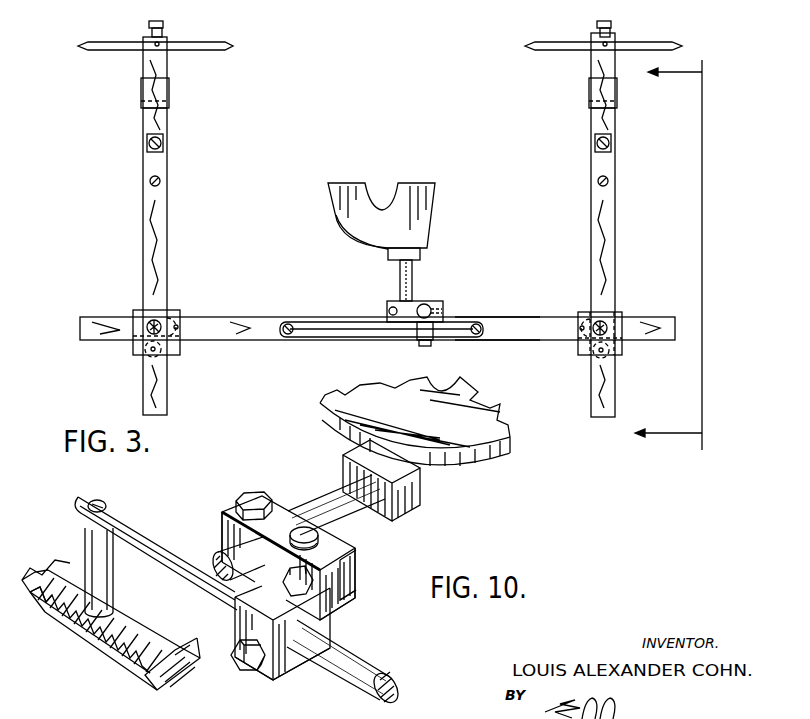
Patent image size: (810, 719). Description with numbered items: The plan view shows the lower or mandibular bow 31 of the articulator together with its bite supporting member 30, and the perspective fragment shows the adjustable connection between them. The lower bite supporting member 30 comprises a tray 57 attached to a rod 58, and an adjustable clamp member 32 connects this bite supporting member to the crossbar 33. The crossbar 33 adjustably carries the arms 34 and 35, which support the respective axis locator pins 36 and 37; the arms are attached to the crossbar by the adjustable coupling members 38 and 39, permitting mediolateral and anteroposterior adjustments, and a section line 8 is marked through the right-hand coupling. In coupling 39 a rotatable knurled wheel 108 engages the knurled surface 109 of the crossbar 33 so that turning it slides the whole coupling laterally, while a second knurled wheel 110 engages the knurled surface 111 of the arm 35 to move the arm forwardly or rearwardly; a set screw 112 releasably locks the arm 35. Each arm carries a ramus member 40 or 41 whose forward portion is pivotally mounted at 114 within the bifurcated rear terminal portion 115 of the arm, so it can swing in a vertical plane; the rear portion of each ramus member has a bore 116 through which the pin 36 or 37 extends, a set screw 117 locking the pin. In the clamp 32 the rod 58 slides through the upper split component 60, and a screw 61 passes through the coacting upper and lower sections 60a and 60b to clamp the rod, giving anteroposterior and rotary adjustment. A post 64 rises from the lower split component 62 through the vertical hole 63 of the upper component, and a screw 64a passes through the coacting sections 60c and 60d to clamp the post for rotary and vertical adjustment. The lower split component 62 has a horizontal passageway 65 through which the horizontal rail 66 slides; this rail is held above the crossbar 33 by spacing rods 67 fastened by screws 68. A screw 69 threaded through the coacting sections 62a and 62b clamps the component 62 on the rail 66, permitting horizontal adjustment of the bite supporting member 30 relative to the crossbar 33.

In FIG. 3, the section line 8 is at (676, 255).
In FIG. 3, the lower bite supporting member 30 is at (340, 228).
In FIG. 10, the lower bite supporting member 30 is at (481, 408).
In FIG. 3, the lower or mandibular bow 31 is at (497, 318).
In FIG. 3, the adjustable clamp member 32 is at (420, 302).
In FIG. 10, the adjustable clamp member 32 is at (348, 558).
In FIG. 3, the crossbar 33 is at (250, 320).
In FIG. 10, the crossbar 33 is at (110, 636).
In FIG. 3, the arm 34 is at (168, 200).
In FIG. 3, the arm 35 is at (591, 222).
In FIG. 3, the axis locator pin 36 is at (132, 44).
In FIG. 3, the axis locator pin 37 is at (581, 44).
In FIG. 3, the adjustable coupling member 38 is at (174, 357).
In FIG. 3, the adjustable coupling member 39 is at (624, 357).
In FIG. 3, the ramus member 40 is at (158, 112).
In FIG. 3, the ramus member 41 is at (601, 118).
In FIG. 3, the tray 57 is at (418, 183).
In FIG. 10, the tray 57 is at (512, 444).
In FIG. 3, the rod 58 is at (399, 287).
In FIG. 10, the rod 58 is at (318, 500).
In FIG. 3, the upper split component 60 is at (390, 311).
In FIG. 10, the upper split component 60 is at (283, 505).
In FIG. 10, the upper section 60a is at (227, 515).
In FIG. 10, the lower section 60b is at (228, 536).
In FIG. 10, the coacting section 60c is at (342, 604).
In FIG. 10, the coacting section 60d is at (352, 584).
In FIG. 10, the screw 61 is at (238, 496).
In FIG. 3, the lower split component 62 is at (432, 334).
In FIG. 10, the lower split component 62 is at (332, 620).
In FIG. 10, the coacting section 62a is at (258, 666).
In FIG. 10, the coacting section 62b is at (289, 660).
In FIG. 10, the vertical hole 63 is at (318, 540).
In FIG. 3, the post 64 is at (424, 304).
In FIG. 10, the post 64 is at (312, 535).
In FIG. 10, the screw 64a is at (300, 616).
In FIG. 10, the horizontal passageway 65 is at (290, 627).
In FIG. 3, the horizontal rail 66 is at (310, 324).
In FIG. 10, the horizontal rail 66 is at (145, 535).
In FIG. 10, the spacing rod 67 is at (85, 552).
In FIG. 3, the screw 68 is at (289, 324).
In FIG. 10, the screw 68 is at (106, 502).
In FIG. 3, the screw 69 is at (424, 347).
In FIG. 10, the screw 69 is at (243, 662).
In FIG. 3, the rotatable knurled wheel 108 is at (600, 357).
In FIG. 3, the knurled surface 109 is at (510, 342).
In FIG. 10, the knurled surface 109 is at (56, 622).
In FIG. 3, the rotatably mounted knurled wheel 110 is at (580, 324).
In FIG. 3, the knurled surface 111 is at (590, 288).
In FIG. 3, the set screw 112 is at (150, 322).
In FIG. 3, the pivotal mounting 114 is at (166, 104).
In FIG. 3, the bifurcated rear terminal portion 115 is at (143, 84).
In FIG. 3, the bore 116 is at (165, 46).
In FIG. 3, the set screw 117 is at (158, 20).